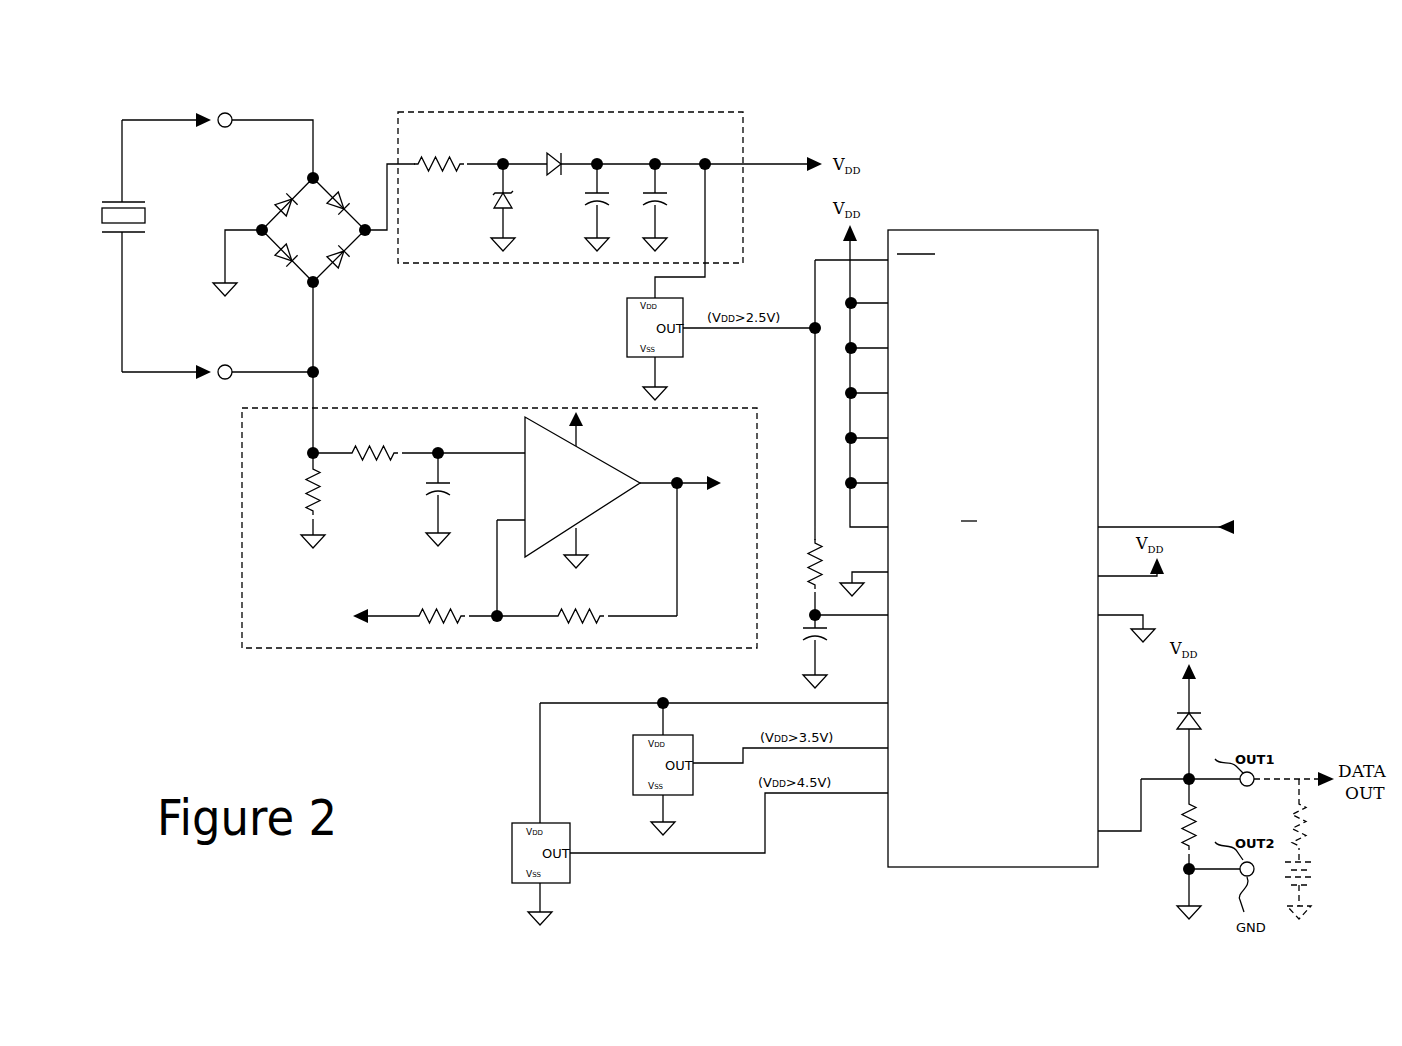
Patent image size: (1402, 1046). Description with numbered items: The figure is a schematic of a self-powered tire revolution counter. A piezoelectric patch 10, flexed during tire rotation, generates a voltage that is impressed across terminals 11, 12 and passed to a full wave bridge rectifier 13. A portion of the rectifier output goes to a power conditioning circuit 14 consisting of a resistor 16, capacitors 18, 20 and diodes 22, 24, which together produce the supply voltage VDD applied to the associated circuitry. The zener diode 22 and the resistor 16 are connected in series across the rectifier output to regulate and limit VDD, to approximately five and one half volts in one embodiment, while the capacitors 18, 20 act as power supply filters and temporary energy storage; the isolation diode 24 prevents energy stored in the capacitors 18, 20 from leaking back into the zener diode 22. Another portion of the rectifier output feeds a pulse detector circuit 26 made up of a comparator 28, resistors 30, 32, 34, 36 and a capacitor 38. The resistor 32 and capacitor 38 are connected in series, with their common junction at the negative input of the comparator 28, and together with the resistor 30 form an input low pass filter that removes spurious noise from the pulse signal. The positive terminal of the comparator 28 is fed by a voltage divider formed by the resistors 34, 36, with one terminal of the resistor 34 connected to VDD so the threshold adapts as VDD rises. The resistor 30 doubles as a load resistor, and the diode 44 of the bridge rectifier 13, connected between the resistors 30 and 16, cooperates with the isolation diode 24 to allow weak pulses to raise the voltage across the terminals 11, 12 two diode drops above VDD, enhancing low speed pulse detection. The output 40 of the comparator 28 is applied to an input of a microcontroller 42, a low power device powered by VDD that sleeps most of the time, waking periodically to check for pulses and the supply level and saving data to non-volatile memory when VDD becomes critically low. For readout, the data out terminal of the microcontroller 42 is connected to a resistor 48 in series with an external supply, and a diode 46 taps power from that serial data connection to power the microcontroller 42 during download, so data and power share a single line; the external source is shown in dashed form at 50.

The piezoelectric patch 10 is at (104, 215).
The terminal 11 is at (228, 113).
The terminal 12 is at (222, 379).
The full wave bridge rectifier 13 is at (322, 190).
The power conditioning circuit 14 is at (502, 112).
The resistor 16 is at (426, 174).
The capacitor 18 is at (600, 200).
The capacitor 20 is at (658, 200).
The zener diode 22 is at (498, 198).
The isolation diode 24 is at (556, 176).
The pulse detector circuit 26 is at (242, 522).
The comparator 28 is at (582, 479).
The resistor 30 is at (306, 492).
The resistor 32 is at (370, 460).
The resistor 34 is at (428, 606).
The resistor 36 is at (600, 612).
The capacitor 38 is at (450, 494).
The output 40 is at (1242, 528).
The microcontroller 42 is at (1016, 230).
The diode 44 is at (338, 262).
The diode 46 is at (1200, 712).
The resistor 48 is at (1312, 812).
The battery 50 is at (1313, 862).